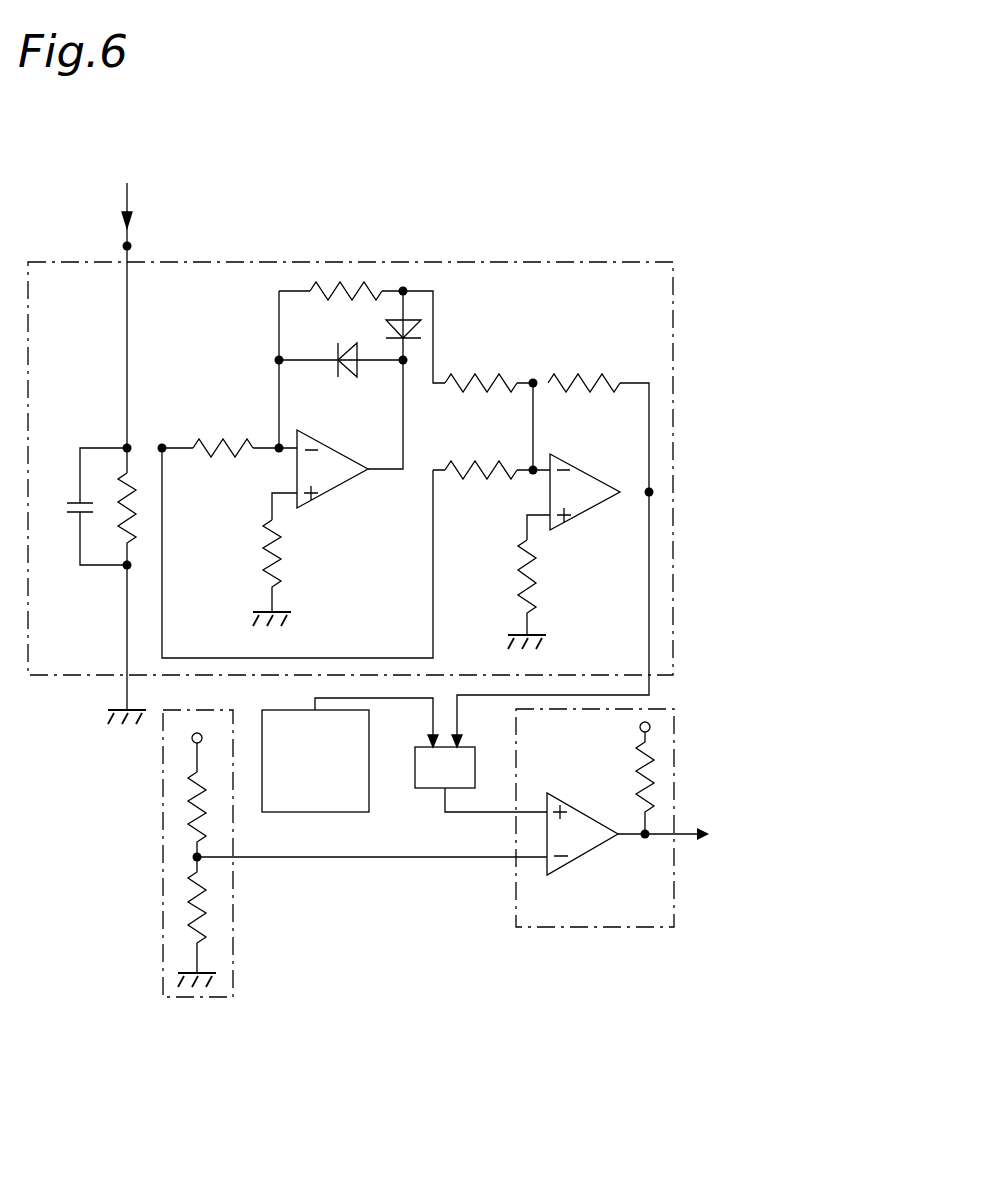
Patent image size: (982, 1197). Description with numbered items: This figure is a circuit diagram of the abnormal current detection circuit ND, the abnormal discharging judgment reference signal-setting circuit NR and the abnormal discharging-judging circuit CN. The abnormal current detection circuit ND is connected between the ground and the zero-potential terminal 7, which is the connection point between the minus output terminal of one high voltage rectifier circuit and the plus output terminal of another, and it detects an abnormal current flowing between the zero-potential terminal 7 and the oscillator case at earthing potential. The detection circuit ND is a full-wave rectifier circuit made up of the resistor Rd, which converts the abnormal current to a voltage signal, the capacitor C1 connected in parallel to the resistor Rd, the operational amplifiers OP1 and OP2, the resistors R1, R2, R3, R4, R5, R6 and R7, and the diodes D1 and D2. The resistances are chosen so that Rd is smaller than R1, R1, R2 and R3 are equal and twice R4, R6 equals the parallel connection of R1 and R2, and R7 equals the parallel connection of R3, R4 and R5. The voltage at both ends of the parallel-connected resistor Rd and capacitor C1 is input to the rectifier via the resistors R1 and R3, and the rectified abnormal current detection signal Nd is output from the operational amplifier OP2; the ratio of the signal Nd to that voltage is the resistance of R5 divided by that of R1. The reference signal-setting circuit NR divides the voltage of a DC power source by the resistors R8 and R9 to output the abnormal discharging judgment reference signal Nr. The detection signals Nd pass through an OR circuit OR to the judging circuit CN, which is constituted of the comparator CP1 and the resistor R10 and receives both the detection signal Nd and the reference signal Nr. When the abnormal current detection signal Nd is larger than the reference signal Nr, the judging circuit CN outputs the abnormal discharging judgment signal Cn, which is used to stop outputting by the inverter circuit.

The zero-potential terminal 7 is at (133, 246).
The abnormal current detection circuit ND is at (232, 260).
The capacitor C1 is at (61, 500).
The resistor Rd is at (144, 508).
The resistor R1 is at (210, 438).
The resistor R2 is at (348, 286).
The resistor R3 is at (462, 468).
The resistor R4 is at (506, 378).
The resistor R5 is at (588, 378).
The resistor R6 is at (291, 554).
The resistor R7 is at (541, 580).
The resistor R8 is at (184, 796).
The resistor R9 is at (184, 926).
The resistor R10 is at (629, 774).
The diode D1 is at (343, 354).
The diode D2 is at (415, 323).
The operational amplifier OP1 is at (341, 457).
The operational amplifier OP2 is at (589, 481).
The comparator CP1 is at (588, 848).
The OR circuit OR is at (413, 790).
The abnormal current detection signal Nd is at (430, 720).
The abnormal discharging judgment reference signal Nr is at (390, 860).
The abnormal discharging judgment reference signal-setting circuit NR is at (238, 957).
The abnormal discharging-judging circuit CN is at (681, 740).
The abnormal discharging judgment signal Cn is at (684, 836).